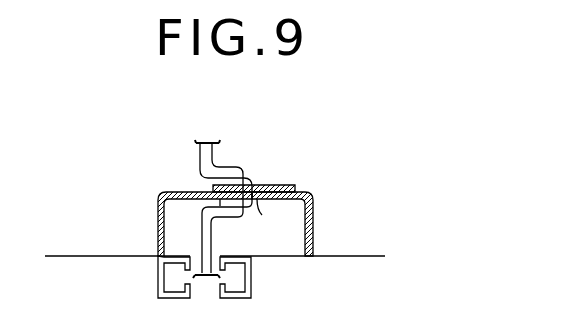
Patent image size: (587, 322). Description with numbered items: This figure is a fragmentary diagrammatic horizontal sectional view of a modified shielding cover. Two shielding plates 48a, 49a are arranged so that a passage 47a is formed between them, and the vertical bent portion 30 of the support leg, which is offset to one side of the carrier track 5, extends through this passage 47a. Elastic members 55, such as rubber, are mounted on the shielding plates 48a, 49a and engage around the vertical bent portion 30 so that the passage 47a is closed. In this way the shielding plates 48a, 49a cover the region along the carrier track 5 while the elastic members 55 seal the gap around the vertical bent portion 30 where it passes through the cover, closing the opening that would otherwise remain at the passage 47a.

The carrier track 5 is at (252, 276).
The vertical bent portion 30 is at (254, 186).
The passage 47a is at (289, 200).
The shielding plate 48a is at (157, 233).
The shielding plate 49a is at (315, 227).
The elastic member 55 is at (282, 187).